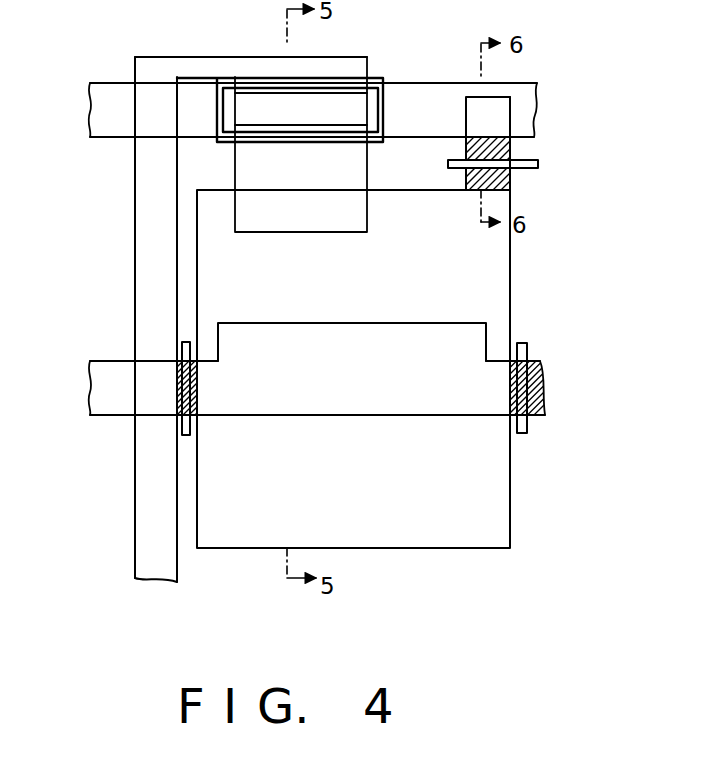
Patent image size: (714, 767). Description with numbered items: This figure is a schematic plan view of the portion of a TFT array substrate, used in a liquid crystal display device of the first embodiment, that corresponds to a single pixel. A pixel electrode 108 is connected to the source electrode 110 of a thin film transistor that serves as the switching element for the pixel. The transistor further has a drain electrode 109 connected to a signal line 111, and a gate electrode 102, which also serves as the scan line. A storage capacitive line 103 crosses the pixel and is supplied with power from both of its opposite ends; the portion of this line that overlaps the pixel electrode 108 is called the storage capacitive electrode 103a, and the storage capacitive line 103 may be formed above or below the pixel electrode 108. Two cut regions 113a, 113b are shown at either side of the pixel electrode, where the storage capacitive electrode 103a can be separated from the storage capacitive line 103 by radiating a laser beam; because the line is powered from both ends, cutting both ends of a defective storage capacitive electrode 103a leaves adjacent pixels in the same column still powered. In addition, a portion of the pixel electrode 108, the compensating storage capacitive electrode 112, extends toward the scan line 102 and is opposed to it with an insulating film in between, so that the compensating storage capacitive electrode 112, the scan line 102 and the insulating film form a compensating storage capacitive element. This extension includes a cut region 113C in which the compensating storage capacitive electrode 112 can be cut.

The gate electrode 102 is at (101, 108).
The storage capacitive line 103 is at (92, 386).
The storage capacitive electrode 103a is at (375, 405).
The pixel electrode 108 is at (497, 292).
The drain electrode 109 is at (216, 56).
The source electrode 110 is at (318, 232).
The signal line 111 is at (134, 259).
The compensating storage capacitive electrode 112 is at (470, 117).
The cut region 113a is at (200, 390).
The cut region 113b is at (545, 413).
The cut region 113C is at (462, 165).